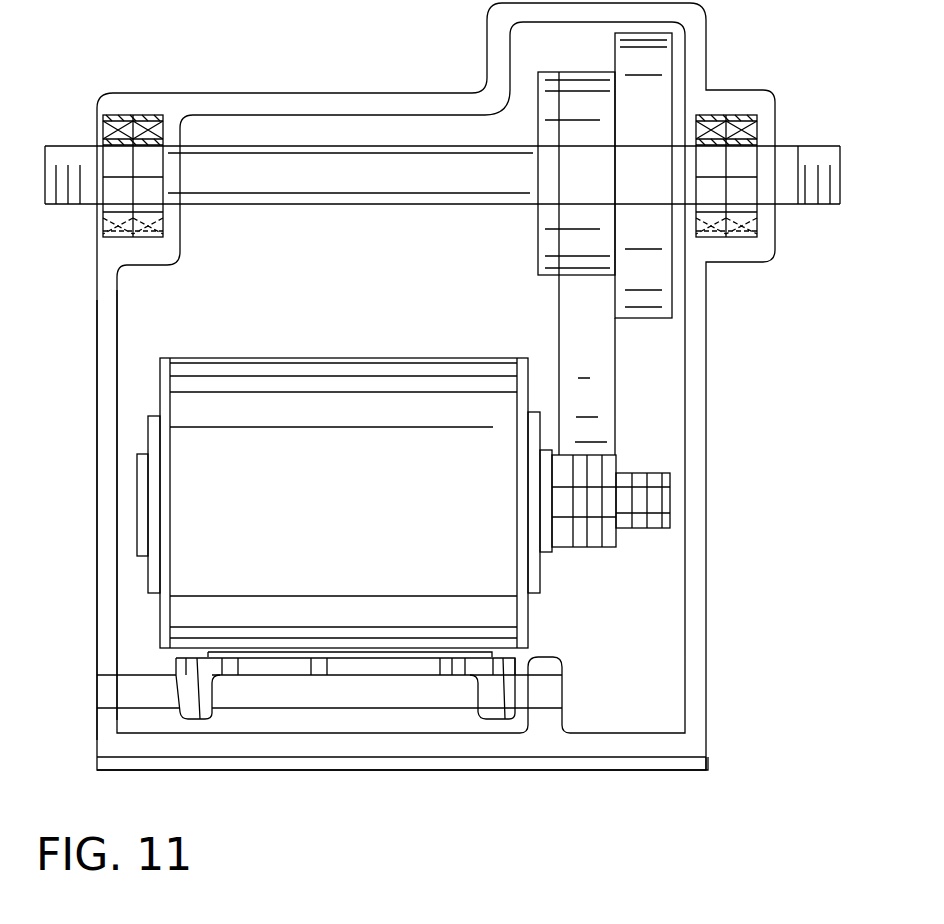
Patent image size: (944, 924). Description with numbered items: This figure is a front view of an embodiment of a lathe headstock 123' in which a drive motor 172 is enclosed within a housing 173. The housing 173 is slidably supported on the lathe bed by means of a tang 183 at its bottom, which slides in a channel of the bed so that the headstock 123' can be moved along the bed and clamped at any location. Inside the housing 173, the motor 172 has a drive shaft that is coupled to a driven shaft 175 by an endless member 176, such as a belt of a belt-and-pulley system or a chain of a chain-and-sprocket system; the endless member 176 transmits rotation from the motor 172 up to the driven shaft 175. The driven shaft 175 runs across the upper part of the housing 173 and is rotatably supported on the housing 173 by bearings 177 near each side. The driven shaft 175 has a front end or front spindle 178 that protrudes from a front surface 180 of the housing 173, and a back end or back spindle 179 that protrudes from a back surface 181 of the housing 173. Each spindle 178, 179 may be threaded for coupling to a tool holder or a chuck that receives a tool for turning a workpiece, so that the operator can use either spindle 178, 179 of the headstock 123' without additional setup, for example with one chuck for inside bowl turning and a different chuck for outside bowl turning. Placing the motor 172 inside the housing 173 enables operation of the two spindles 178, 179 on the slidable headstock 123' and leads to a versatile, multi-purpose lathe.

The headstock 123' is at (501, 386).
The drive motor 172 is at (308, 360).
The housing 173 is at (107, 387).
The driven shaft 175 is at (363, 192).
The endless member 176 is at (568, 310).
The bearings 177 is at (140, 113).
The front spindle 178 is at (820, 142).
The back spindle 179 is at (62, 135).
The front surface 180 is at (707, 352).
The back surface 181 is at (97, 504).
The tang 183 is at (714, 776).